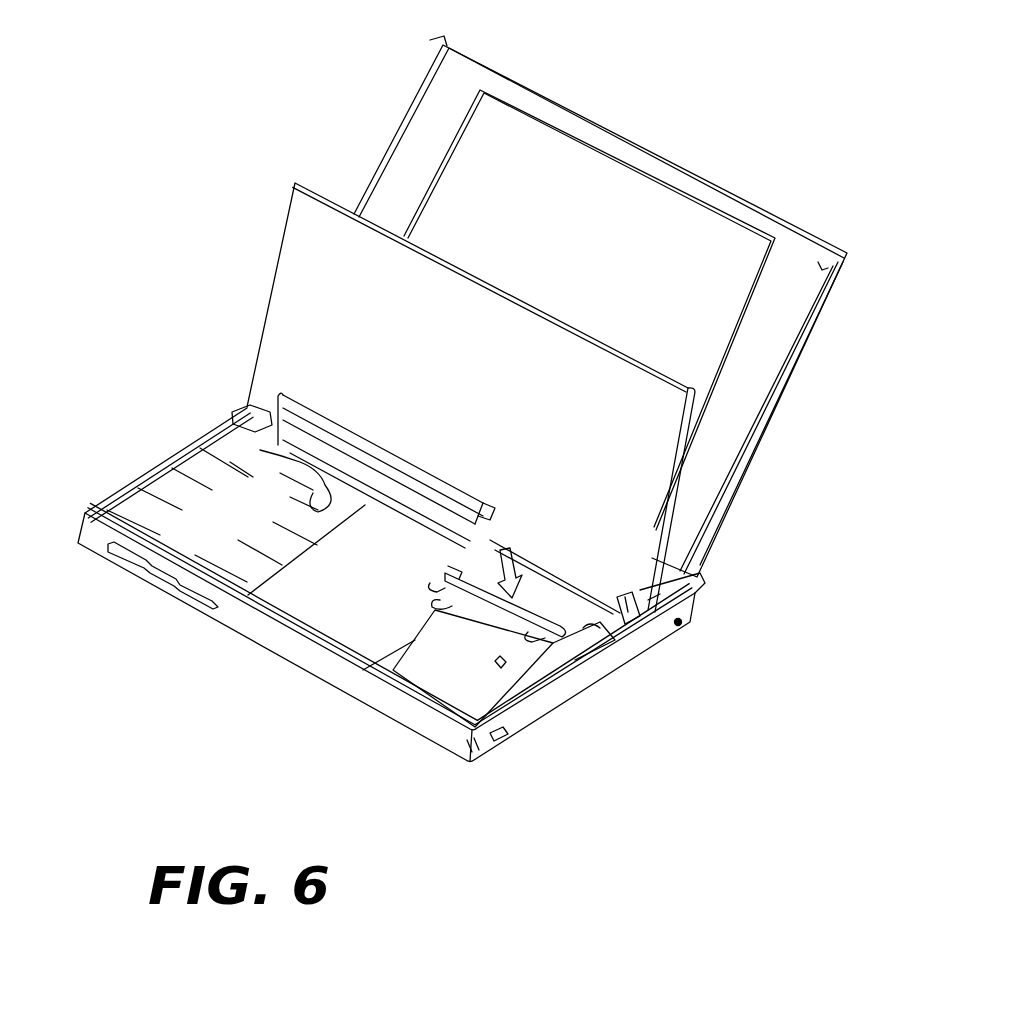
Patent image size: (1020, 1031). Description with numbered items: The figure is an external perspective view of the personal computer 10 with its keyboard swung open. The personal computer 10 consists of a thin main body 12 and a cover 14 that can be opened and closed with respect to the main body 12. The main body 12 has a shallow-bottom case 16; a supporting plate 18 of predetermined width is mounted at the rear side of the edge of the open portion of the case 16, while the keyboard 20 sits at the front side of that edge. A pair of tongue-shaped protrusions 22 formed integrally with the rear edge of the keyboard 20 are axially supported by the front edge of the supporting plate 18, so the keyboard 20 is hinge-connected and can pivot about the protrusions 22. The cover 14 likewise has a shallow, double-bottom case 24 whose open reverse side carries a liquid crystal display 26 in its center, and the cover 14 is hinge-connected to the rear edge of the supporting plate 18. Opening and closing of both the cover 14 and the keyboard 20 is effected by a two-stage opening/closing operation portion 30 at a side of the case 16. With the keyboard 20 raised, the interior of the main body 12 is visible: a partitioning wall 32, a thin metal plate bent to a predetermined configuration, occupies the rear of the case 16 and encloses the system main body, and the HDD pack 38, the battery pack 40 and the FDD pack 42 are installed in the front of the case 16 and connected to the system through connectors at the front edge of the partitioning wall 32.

The personal computer 10 is at (640, 62).
The main body 12 is at (336, 718).
The cover 14 is at (808, 444).
The case 16 is at (225, 618).
The supporting plate 18 is at (685, 585).
The keyboard 20 is at (283, 248).
The tongue-shaped protrusions 22 is at (252, 408).
The case 24 is at (806, 357).
The liquid crystal display 26 is at (688, 217).
The opening/closing operation portion 30 is at (507, 736).
The partitioning wall 32 is at (592, 640).
The HDD pack 38 is at (450, 693).
The battery pack 40 is at (313, 628).
The FDD pack 42 is at (128, 507).